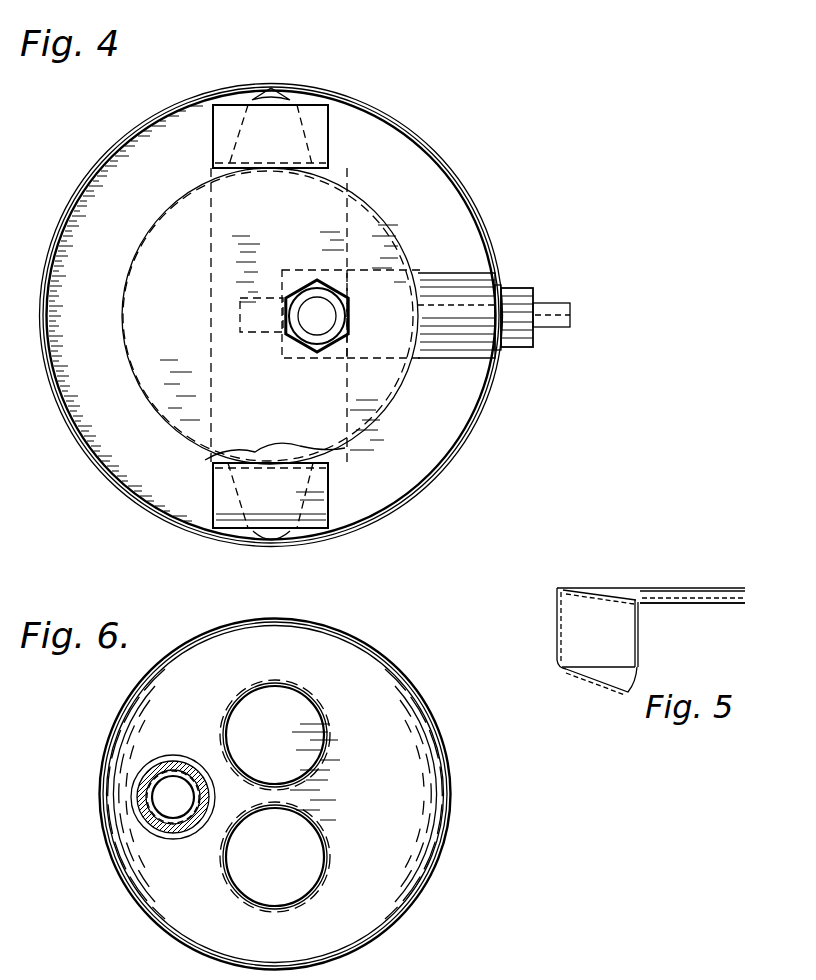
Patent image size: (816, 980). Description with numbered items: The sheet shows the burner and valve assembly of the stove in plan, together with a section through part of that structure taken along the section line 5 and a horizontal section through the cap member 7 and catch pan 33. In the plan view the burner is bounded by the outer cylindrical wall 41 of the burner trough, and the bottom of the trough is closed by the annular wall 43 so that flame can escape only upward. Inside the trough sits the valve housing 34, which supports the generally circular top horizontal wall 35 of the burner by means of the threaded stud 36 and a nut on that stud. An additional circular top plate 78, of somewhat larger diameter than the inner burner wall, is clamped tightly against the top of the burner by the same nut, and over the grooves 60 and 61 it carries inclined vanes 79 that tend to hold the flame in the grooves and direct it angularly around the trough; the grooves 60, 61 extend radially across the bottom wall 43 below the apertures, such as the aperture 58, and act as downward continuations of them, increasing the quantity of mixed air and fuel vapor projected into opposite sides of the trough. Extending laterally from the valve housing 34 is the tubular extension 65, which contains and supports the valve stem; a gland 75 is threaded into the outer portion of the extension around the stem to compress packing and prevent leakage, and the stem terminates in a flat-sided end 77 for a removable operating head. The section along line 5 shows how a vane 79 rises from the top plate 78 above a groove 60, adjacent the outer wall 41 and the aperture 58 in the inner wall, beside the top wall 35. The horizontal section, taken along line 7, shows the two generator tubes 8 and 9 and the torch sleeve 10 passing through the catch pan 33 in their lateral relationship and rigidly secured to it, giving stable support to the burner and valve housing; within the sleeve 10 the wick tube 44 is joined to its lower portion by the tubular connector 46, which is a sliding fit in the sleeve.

In FIG. 4, the section line 5— 5 is at (271, 200).
In FIG. 6, the member 7 is at (117, 797).
In FIG. 6, the generator tube 8 is at (326, 722).
In FIG. 6, the generator tube 9 is at (326, 870).
In FIG. 6, the torch sleeve 10 is at (135, 813).
In FIG. 6, the catch pan 33 is at (425, 852).
In FIG. 4, the valve housing 34 is at (320, 270).
In FIG. 4, the top horizontal wall 35 is at (325, 460).
In FIG. 5, the top horizontal wall 35 is at (718, 606).
In FIG. 4, the threaded stud 36 is at (318, 318).
In FIG. 4, the outer cylindrical wall 41 is at (460, 176).
In FIG. 5, the outer cylindrical wall 41 is at (557, 622).
In FIG. 4, the annular bottom wall 43 is at (465, 393).
In FIG. 6, the wick tube 44 is at (153, 782).
In FIG. 6, the tubular connector 46 is at (150, 832).
In FIG. 5, the aperture 58 is at (641, 636).
In FIG. 4, the groove 60 is at (282, 94).
In FIG. 5, the groove 60 is at (562, 672).
In FIG. 4, the groove 61 is at (292, 545).
In FIG. 4, the tubular extension 65 is at (458, 275).
In FIG. 4, the gland 75 is at (530, 293).
In FIG. 4, the flat-sided portion 77 is at (568, 308).
In FIG. 4, the top plate 78 is at (393, 405).
In FIG. 5, the top plate 78 is at (682, 598).
In FIG. 4, the inclined vane 79 is at (330, 130).
In FIG. 5, the inclined vane 79 is at (593, 590).